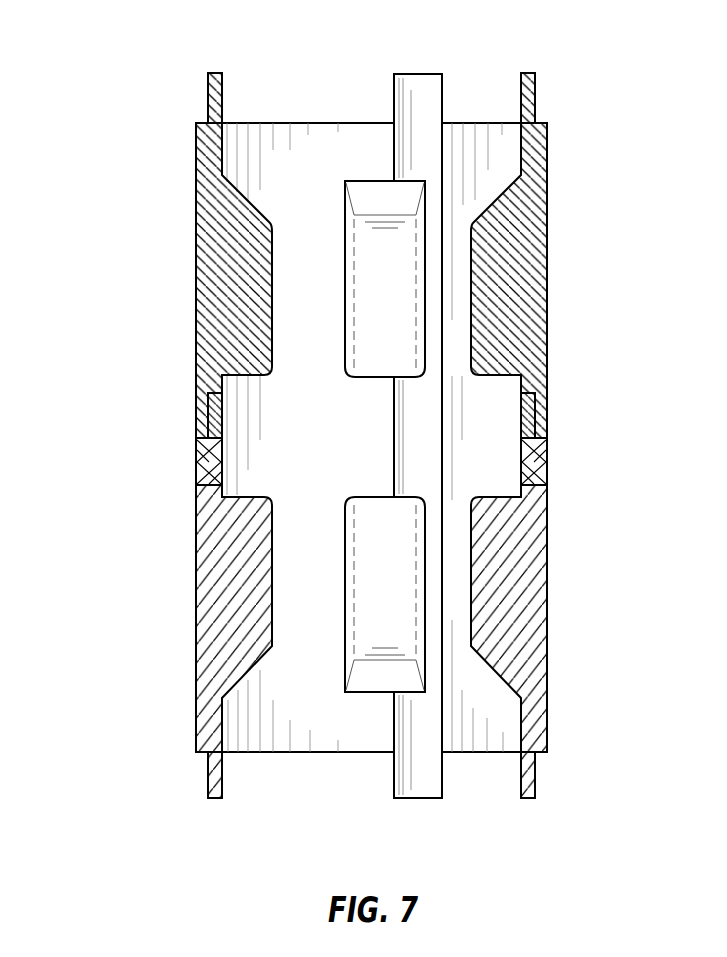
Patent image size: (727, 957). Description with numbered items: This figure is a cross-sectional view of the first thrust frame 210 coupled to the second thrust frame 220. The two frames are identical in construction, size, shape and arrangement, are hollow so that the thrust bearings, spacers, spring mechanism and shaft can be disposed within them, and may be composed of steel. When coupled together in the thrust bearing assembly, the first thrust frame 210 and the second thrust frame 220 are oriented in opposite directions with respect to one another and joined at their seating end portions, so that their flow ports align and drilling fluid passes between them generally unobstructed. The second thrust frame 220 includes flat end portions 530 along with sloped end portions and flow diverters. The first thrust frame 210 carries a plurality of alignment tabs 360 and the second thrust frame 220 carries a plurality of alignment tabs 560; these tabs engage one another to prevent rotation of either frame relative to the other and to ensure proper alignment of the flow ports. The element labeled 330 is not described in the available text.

The first thrust frame 210 is at (134, 60).
The second thrust frame 220 is at (156, 672).
The upper housing portion 330 is at (258, 374).
The alignment tabs 360 is at (541, 403).
The alignment tabs 560 is at (541, 465).
The flat end portions 530 is at (502, 500).